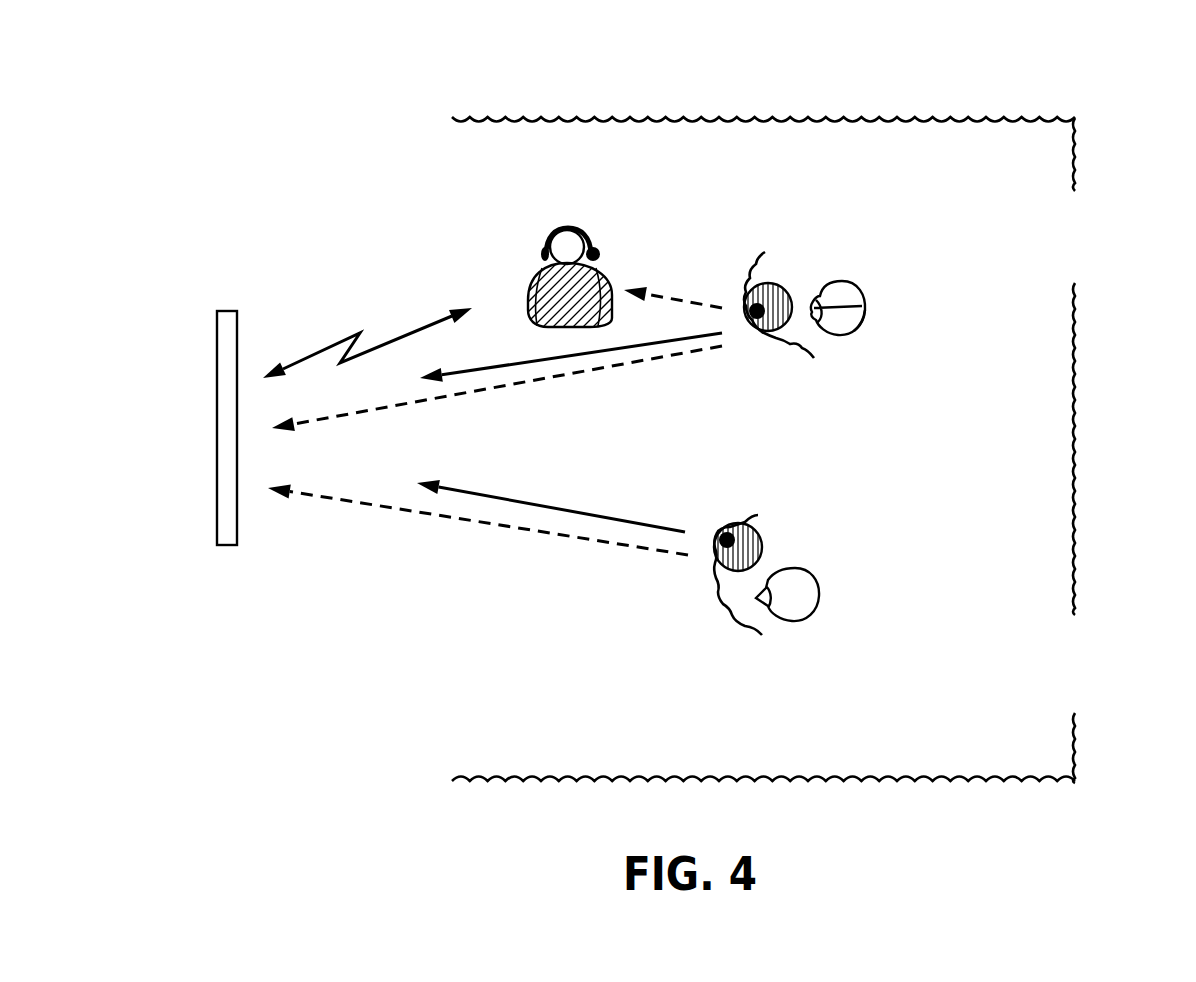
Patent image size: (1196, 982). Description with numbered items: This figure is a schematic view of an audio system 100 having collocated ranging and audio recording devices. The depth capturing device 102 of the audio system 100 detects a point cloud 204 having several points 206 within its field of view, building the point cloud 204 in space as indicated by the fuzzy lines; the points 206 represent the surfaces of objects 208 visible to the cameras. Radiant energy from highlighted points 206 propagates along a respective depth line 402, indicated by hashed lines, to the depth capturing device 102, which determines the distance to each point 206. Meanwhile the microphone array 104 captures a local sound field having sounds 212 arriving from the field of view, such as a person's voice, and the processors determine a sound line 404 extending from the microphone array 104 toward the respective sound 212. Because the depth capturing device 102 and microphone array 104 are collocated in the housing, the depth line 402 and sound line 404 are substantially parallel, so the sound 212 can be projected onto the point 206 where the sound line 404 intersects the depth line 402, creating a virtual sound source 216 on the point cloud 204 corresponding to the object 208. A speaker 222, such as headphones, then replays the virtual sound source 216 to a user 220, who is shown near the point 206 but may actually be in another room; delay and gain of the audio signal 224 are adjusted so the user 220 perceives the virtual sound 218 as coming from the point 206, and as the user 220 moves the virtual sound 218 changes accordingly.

The audio system 100 is at (201, 342).
The depth capturing device 102 is at (201, 342).
The microphone array 104 is at (232, 311).
The point cloud 204 is at (763, 263).
The point 206 is at (956, 263).
The object 208 is at (863, 296).
The sound 212 is at (765, 306).
The virtual sound source 216 is at (860, 308).
The virtual sound 218 is at (691, 297).
The user 220 is at (612, 282).
The speaker 222 is at (596, 247).
The audio signal 224 is at (393, 340).
The depth line 402 is at (535, 383).
The sound line 404 is at (687, 340).